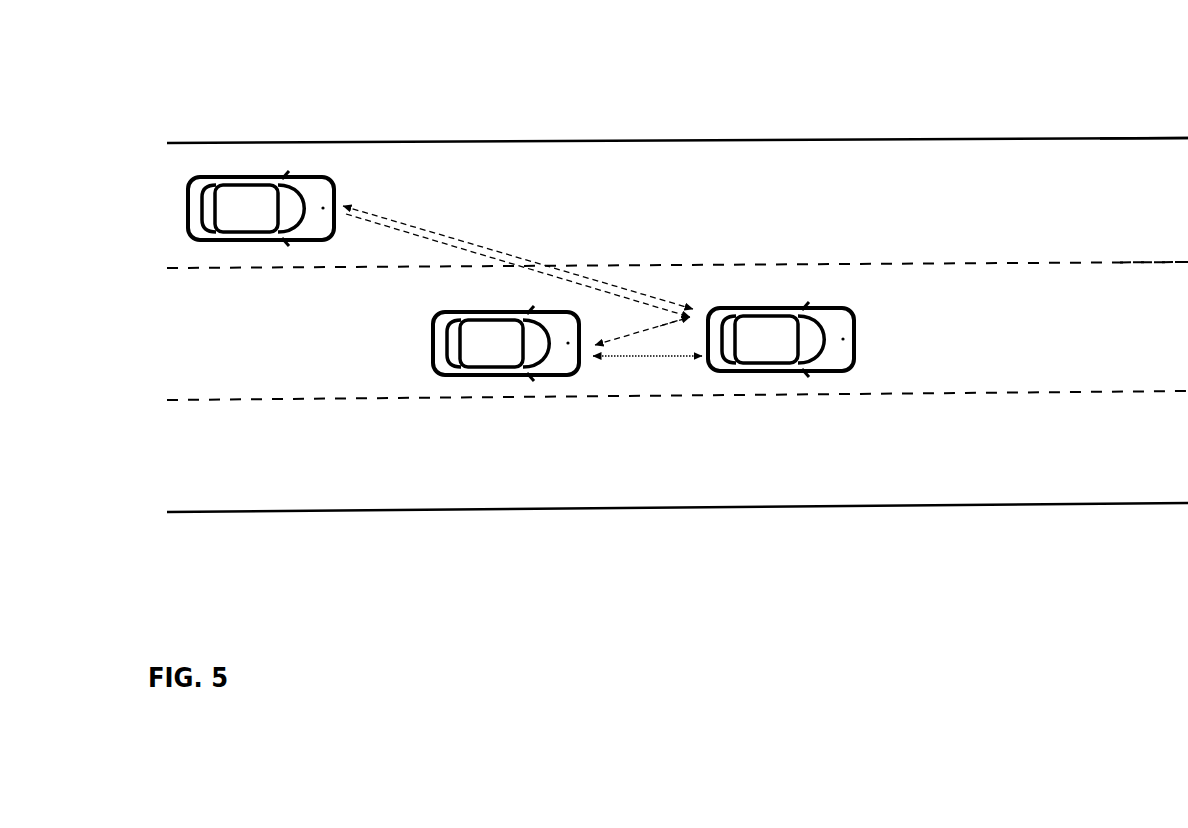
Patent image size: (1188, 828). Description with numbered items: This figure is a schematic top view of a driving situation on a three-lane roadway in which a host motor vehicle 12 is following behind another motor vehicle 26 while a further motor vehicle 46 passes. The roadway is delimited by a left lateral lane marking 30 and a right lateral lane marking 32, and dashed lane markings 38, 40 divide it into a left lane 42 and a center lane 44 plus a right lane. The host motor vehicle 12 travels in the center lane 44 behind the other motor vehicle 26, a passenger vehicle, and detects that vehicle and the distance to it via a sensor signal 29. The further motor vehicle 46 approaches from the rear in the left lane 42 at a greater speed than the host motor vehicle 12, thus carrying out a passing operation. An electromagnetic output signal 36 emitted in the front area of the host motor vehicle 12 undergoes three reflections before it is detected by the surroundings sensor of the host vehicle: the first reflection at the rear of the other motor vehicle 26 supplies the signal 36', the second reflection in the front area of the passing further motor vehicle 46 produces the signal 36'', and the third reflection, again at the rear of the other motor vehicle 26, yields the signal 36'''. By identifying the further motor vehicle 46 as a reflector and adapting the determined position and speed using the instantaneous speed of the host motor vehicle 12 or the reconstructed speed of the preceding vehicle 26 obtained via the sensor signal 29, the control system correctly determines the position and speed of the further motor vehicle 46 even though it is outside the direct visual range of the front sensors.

The host motor vehicle 12 is at (457, 372).
The other motor vehicle 26 is at (810, 372).
The sensor signal 29 is at (622, 357).
The left lateral lane marking 30 is at (167, 143).
The right lateral lane marking 32 is at (175, 511).
The electromagnetic output signal 36 is at (719, 210).
The first reflected signal 36' is at (518, 184).
The second reflected signal 36'' is at (518, 180).
The third reflected signal 36''' is at (812, 209).
The lane marking 38 is at (167, 268).
The lane marking 40 is at (167, 400).
The left lane 42 is at (1140, 137).
The center lane 44 is at (1158, 261).
The further motor vehicle 46 is at (258, 176).